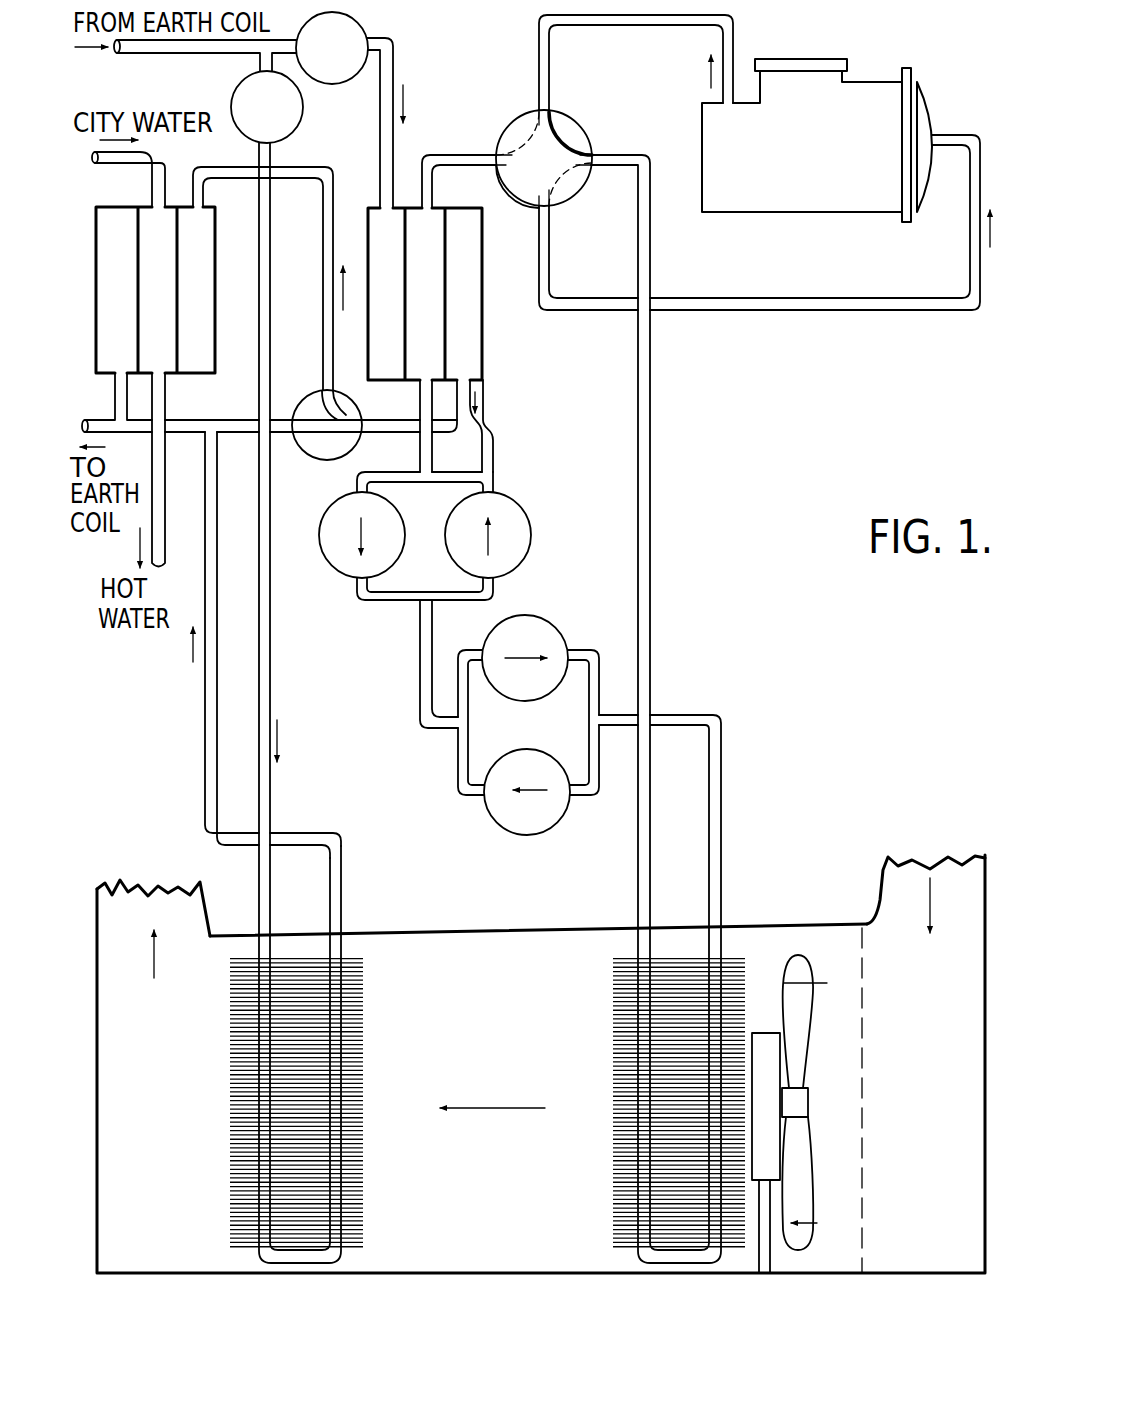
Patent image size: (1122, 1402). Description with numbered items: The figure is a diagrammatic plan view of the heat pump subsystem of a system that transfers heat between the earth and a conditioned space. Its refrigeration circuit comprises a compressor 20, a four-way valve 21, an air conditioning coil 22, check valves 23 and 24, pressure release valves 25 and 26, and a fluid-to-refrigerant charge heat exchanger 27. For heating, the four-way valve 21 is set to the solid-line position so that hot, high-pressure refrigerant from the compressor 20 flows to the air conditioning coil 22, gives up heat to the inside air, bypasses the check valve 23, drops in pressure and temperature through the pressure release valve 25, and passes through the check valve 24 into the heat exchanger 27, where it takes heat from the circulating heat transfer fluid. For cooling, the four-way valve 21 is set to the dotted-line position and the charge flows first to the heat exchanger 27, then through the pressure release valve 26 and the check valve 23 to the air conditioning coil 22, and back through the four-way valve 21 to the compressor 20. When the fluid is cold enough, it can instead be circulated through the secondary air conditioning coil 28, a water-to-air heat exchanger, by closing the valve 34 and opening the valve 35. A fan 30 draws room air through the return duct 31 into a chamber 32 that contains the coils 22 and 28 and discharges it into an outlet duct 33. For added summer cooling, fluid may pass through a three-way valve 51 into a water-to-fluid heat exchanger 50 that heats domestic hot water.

The compressor 20 is at (832, 158).
The 4-way valve 21 is at (574, 116).
The air conditioning coil 22 is at (645, 1020).
The check valve 23 is at (531, 614).
The check valve 24 is at (527, 510).
The pressure release valve 25 is at (562, 818).
The pressure release valve 26 is at (324, 558).
The fluid-to-refrigerant charge heat exchanger 27 is at (484, 349).
The secondary air conditioning coil 28 is at (333, 1033).
The fan 30 is at (800, 1058).
The return duct 31 is at (895, 897).
The chamber 32 is at (386, 947).
The outlet duct 33 is at (111, 875).
The valve 34 is at (360, 28).
The valve 35 is at (300, 114).
The water-to-fluid heat exchanger 50 is at (217, 344).
The 3-way valve 51 is at (304, 405).